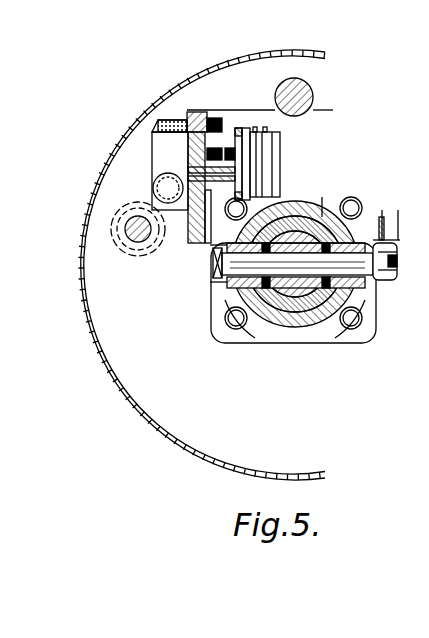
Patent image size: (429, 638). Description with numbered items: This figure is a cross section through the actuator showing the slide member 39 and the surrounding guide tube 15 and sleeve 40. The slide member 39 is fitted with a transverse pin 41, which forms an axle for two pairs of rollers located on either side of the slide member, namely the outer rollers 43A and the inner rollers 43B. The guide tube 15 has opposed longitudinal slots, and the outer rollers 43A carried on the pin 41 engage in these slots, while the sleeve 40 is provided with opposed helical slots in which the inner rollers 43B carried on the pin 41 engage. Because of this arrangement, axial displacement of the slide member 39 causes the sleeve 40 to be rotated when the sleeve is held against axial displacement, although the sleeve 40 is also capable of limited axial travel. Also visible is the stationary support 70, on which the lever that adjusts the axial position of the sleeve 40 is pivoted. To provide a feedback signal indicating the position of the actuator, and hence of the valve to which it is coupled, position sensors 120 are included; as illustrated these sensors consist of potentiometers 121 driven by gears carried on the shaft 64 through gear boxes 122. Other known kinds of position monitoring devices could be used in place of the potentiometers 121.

The guide tube 15 is at (277, 322).
The slide member 39 is at (307, 303).
The sleeve 40 is at (290, 300).
The transverse pin 41 is at (240, 272).
The outer rollers 43A is at (228, 308).
The inner rollers 43B is at (232, 330).
The shaft 64 is at (142, 238).
The stationary support 70 is at (315, 123).
The position sensors 120 is at (231, 124).
The potentiometers 121 is at (265, 172).
The gear boxes 122 is at (157, 155).